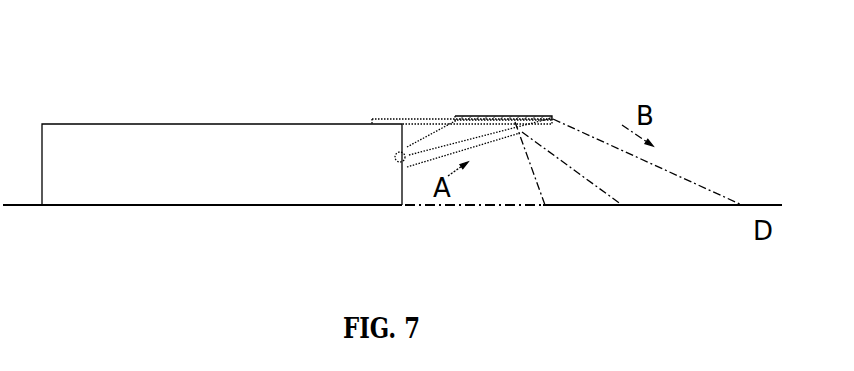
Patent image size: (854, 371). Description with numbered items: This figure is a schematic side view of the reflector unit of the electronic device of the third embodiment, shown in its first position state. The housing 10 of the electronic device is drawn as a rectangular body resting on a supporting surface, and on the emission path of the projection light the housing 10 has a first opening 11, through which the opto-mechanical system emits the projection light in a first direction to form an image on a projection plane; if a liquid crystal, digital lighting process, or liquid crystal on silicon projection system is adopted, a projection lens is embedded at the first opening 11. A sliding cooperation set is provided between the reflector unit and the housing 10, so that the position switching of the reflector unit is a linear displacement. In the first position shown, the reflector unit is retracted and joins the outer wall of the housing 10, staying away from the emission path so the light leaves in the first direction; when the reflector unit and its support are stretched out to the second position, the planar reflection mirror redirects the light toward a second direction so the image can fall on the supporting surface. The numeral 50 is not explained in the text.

The housing body 50 is at (117, 110).
The housing 10 is at (160, 206).
The first opening 11 is at (398, 162).